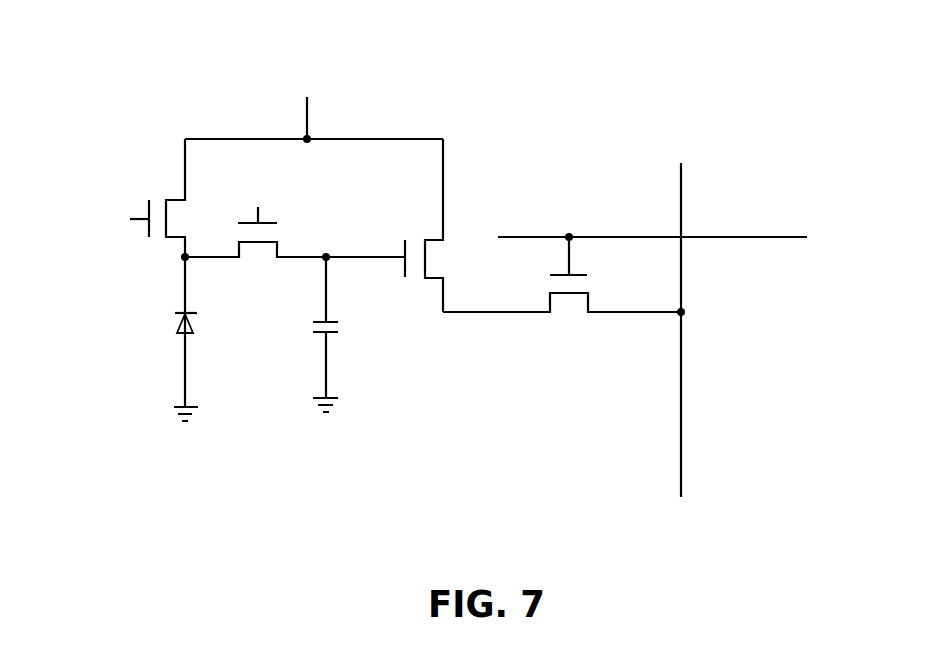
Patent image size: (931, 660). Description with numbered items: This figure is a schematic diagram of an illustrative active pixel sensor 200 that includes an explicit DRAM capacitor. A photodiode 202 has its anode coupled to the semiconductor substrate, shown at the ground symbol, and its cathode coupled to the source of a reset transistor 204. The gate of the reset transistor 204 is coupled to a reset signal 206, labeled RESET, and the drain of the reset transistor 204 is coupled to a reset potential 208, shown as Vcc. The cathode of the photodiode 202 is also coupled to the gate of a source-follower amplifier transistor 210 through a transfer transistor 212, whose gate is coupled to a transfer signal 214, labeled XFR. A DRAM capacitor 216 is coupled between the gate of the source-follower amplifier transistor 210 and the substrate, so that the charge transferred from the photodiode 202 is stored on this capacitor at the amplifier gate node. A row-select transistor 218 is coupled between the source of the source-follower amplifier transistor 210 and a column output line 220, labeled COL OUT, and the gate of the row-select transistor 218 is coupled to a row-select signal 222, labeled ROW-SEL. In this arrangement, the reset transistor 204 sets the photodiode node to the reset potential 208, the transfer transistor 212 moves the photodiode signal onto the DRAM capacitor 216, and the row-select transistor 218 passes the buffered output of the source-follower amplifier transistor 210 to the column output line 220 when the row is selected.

The active pixel sensor 200 is at (490, 93).
The photodiode 202 is at (173, 322).
The reset transistor 204 is at (176, 193).
The reset signal 206 is at (90, 237).
The reset potential 208 is at (338, 68).
The source-follower amplifier transistor 210 is at (446, 268).
The transfer transistor 212 is at (256, 262).
The transfer signal 214 is at (292, 190).
The DRAM capacitor 216 is at (340, 330).
The row-select transistor 218 is at (567, 302).
The column output line 220 is at (685, 343).
The row-select signal 222 is at (720, 230).